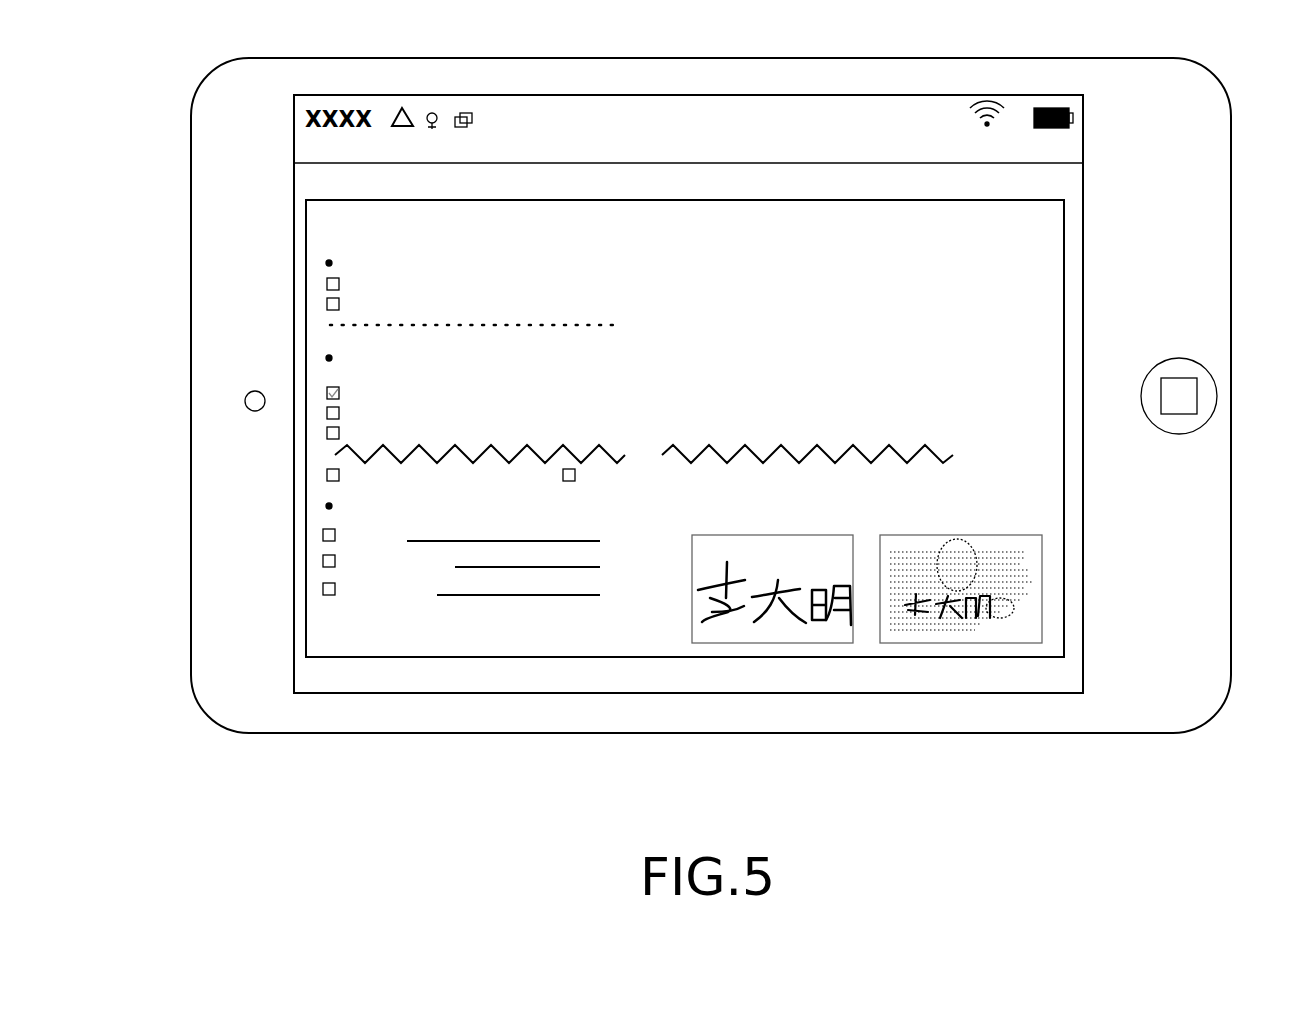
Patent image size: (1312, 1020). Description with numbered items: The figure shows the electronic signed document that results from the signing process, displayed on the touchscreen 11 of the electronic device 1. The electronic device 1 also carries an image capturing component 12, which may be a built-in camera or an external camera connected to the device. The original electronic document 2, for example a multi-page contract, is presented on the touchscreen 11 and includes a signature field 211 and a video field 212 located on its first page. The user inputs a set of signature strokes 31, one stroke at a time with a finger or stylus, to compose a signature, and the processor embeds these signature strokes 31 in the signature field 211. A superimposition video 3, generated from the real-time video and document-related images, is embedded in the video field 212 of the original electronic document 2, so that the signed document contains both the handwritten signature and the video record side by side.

The electronic device 1 is at (178, 102).
The touchscreen 11 is at (294, 563).
The image capturing component 12 is at (248, 398).
The original electronic document 2 is at (801, 459).
The signature field 211 is at (698, 682).
The video field 212 is at (1087, 637).
The superimposition video 3 is at (1040, 577).
The signature strokes 31 is at (728, 604).